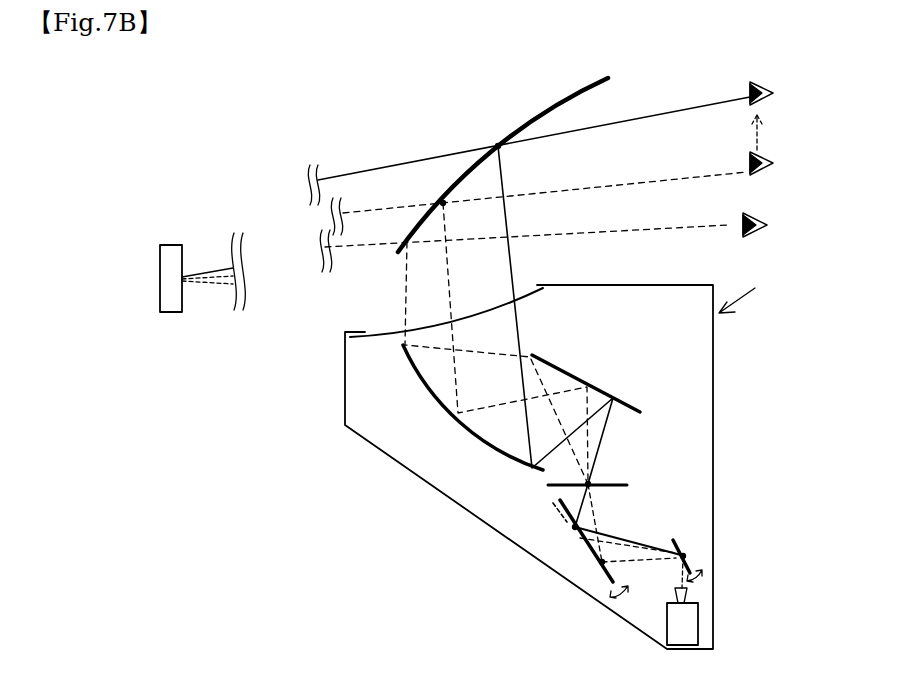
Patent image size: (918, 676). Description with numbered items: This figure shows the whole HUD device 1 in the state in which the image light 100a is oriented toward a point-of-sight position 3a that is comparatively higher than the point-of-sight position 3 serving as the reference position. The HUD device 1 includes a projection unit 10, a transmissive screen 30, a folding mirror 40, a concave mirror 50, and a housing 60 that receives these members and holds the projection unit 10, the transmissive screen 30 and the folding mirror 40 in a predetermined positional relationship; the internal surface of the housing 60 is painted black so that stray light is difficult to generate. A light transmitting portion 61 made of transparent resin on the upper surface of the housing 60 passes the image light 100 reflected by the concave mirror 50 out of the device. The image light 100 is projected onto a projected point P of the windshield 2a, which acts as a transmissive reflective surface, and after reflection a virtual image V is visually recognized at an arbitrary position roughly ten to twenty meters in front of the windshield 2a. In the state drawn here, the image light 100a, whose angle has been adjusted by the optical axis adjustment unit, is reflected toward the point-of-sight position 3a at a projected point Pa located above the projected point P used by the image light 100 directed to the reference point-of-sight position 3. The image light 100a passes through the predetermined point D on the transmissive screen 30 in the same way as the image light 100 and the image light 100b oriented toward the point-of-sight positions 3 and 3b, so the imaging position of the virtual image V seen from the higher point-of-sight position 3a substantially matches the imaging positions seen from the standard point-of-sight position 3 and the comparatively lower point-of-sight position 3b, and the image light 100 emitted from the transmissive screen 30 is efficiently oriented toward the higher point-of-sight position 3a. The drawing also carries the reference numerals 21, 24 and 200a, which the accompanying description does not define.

The HUD device 1 is at (742, 291).
The windshield 2a is at (528, 120).
The point-of-sight position 3 is at (772, 157).
The point-of-sight position 3a is at (772, 88).
The point-of-sight position 3b is at (767, 216).
The projection unit 10 is at (690, 613).
The mirror 21 is at (676, 541).
The scanning mirror 24 is at (575, 530).
The transmissive screen 30 is at (556, 503).
The folding mirror 40 is at (600, 387).
The concave mirror 50 is at (450, 412).
The housing 60 is at (662, 274).
The light transmitting portion 61 is at (503, 308).
The image light 100 is at (672, 176).
The image light 100a is at (641, 119).
The image light 100b is at (618, 229).
The laser beam 200a is at (603, 530).
The predetermined point D is at (592, 484).
The projected point P is at (447, 207).
The projected point Pa is at (495, 143).
The virtual image V is at (171, 312).